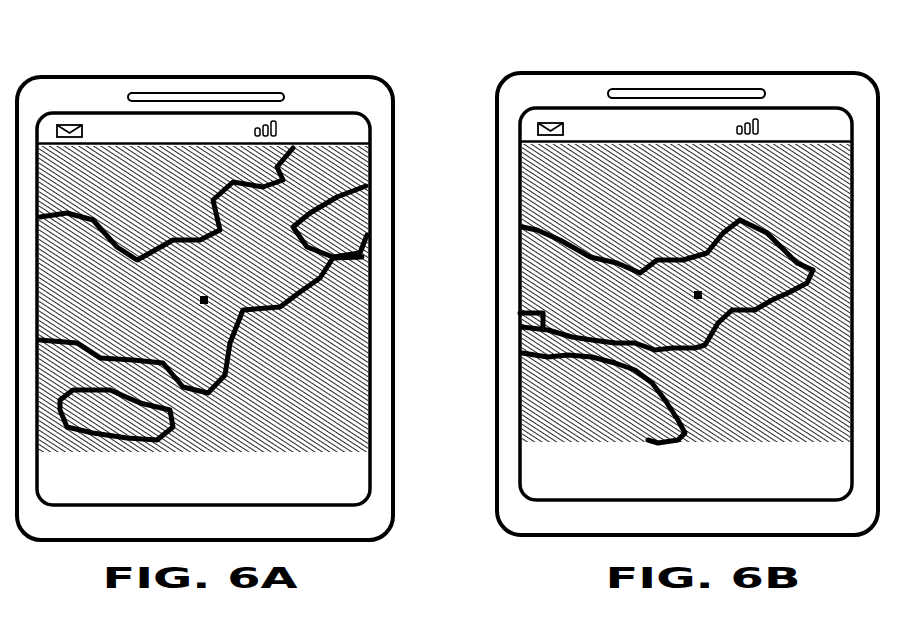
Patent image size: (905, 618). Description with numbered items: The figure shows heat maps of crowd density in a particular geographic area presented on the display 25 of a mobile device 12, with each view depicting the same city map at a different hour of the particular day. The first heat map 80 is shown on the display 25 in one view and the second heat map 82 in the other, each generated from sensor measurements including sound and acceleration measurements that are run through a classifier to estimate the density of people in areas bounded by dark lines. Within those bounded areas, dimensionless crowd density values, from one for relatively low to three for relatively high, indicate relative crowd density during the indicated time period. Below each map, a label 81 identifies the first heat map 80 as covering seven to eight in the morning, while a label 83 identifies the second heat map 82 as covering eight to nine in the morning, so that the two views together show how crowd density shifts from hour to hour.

In FIG. 6A, the mobile device 12 is at (108, 98).
In FIG. 6B, the mobile device 12 is at (630, 82).
In FIG. 6A, the display 25 is at (374, 166).
In FIG. 6B, the display 25 is at (518, 407).
In FIG. 6A, the first heat map 80 is at (362, 257).
In FIG. 6A, the label 81 is at (353, 492).
In FIG. 6B, the second heat map 82 is at (520, 313).
In FIG. 6B, the label 83 is at (820, 492).